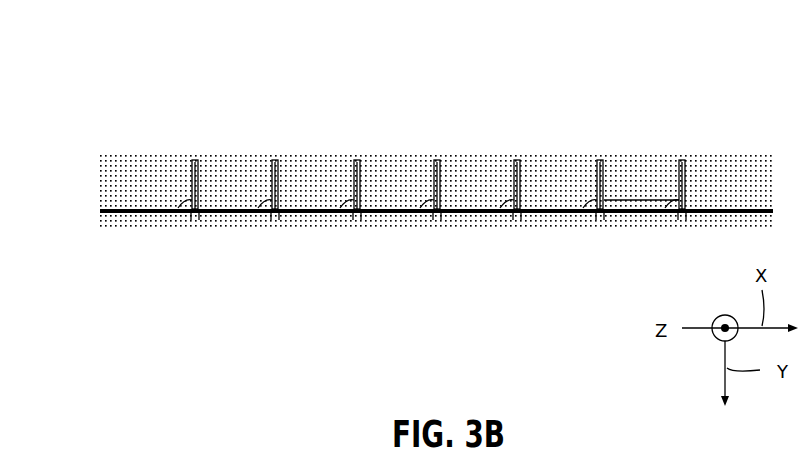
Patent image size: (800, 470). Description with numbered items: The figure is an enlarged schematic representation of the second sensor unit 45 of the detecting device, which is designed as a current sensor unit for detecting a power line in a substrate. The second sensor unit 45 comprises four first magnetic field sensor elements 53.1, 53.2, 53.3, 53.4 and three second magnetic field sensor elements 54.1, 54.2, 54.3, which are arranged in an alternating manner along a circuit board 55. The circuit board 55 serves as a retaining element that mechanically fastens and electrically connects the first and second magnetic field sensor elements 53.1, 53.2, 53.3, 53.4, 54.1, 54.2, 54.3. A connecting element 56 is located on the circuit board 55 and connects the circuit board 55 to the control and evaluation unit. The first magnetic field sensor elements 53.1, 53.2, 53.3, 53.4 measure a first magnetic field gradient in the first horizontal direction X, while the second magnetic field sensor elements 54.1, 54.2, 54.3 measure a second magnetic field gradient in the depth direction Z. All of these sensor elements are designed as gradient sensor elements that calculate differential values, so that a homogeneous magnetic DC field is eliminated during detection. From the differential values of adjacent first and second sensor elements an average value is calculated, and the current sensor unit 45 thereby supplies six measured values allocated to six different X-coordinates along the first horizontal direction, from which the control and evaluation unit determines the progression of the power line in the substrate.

The second sensor unit 45 is at (412, 295).
The circuit board 55 is at (130, 210).
The first magnetic field sensor element 53.1 is at (195, 147).
The first magnetic field sensor element 53.2 is at (355, 147).
The first magnetic field sensor element 53.3 is at (516, 147).
The first magnetic field sensor element 53.4 is at (681, 147).
The second magnetic field sensor element 54.1 is at (274, 147).
The second magnetic field sensor element 54.2 is at (437, 147).
The second magnetic field sensor element 54.3 is at (602, 147).
The connecting element 56 is at (645, 200).